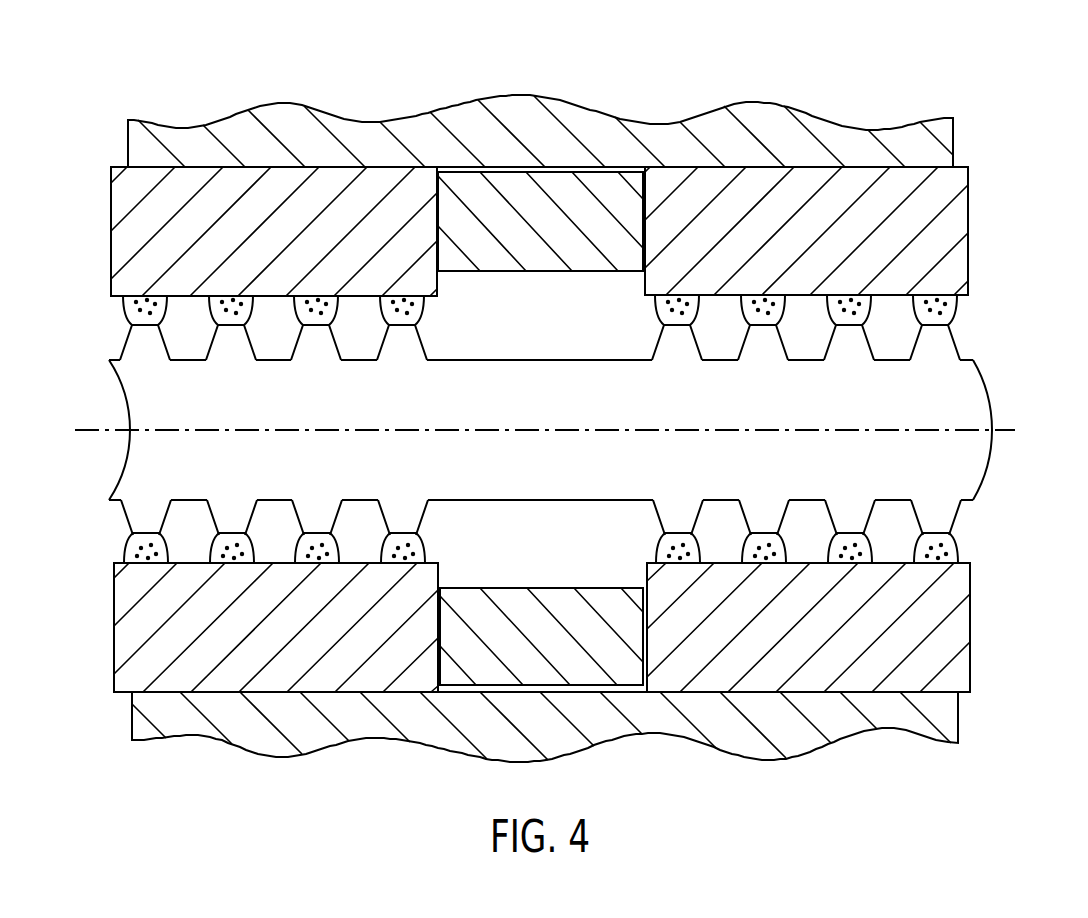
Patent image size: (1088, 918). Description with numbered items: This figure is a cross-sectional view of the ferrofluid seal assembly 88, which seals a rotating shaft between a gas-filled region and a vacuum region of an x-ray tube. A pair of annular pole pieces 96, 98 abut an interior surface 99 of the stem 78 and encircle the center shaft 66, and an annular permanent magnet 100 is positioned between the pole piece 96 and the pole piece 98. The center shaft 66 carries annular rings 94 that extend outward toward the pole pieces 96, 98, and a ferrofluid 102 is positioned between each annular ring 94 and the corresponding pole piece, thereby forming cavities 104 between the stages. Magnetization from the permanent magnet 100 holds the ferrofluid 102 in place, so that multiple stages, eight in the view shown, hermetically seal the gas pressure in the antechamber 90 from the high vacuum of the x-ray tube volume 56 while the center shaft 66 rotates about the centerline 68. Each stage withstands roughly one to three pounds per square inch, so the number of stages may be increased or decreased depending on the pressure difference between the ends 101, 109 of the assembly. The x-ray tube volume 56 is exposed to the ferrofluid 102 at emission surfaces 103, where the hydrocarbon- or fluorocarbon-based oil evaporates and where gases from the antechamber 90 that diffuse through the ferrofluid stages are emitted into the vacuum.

The x-ray tube volume 56 is at (57, 405).
The center shaft 66 is at (955, 463).
The centerline 68 is at (1008, 428).
The stem 78 is at (301, 130).
The ferrofluid seal assembly 88 is at (868, 80).
The antechamber 90 is at (1065, 265).
The annular rings 94 is at (126, 345).
The pole piece 96 is at (235, 178).
The pole piece 98 is at (757, 185).
The interior surface 99 is at (923, 168).
The permanent magnet 100 is at (512, 185).
The end of ferrofluid seal assembly 101 is at (120, 463).
The ferrofluid 102 is at (423, 307).
The emission surfaces 103 is at (124, 310).
The cavities 104 is at (365, 340).
The end of ferrofluid seal assembly 109 is at (982, 377).